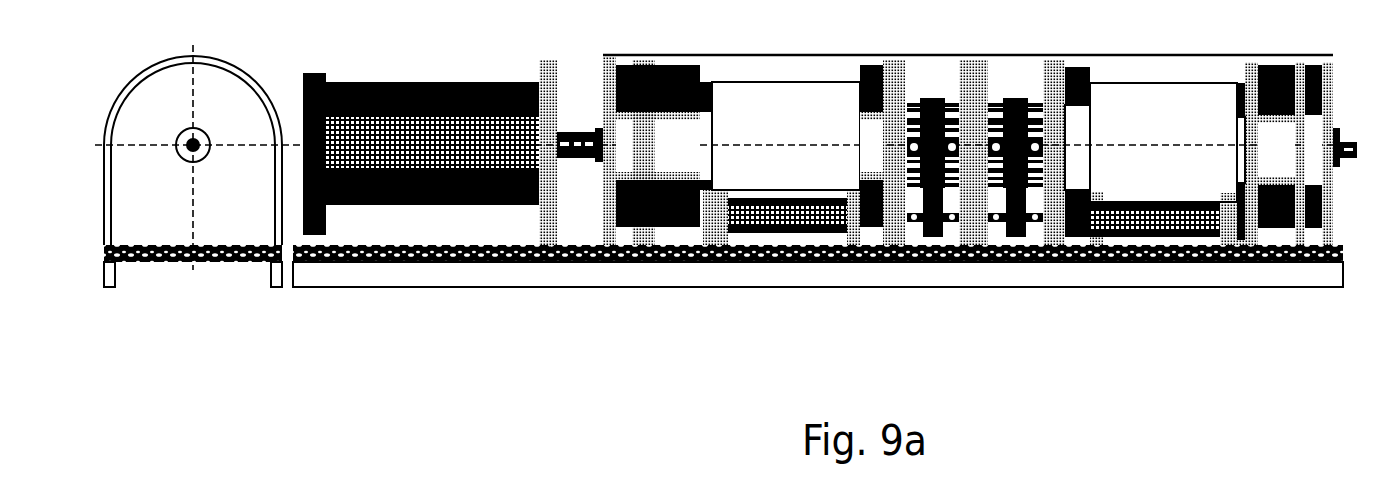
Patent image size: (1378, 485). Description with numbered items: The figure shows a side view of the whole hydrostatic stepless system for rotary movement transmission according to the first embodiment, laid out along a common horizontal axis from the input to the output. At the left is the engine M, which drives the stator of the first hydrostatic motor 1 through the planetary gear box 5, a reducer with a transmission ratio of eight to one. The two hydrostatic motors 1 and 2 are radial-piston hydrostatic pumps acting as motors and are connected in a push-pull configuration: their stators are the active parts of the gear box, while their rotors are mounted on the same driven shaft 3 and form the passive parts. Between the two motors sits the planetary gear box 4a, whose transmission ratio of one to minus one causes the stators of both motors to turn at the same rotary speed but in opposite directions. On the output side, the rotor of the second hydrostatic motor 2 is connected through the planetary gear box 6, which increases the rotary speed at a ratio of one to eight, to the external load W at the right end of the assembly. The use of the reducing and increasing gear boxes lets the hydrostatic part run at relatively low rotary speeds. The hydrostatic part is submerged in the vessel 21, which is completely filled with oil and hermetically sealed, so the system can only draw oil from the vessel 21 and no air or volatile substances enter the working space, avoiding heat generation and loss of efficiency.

The engine M is at (457, 205).
The planetary gear box 5 is at (684, 135).
The hydrostatic motor 1 is at (788, 112).
The vessel 21 is at (808, 65).
The driven shaft 3 is at (952, 167).
The planetary gear box 4a is at (985, 242).
The hydrostatic motor 2 is at (1170, 168).
The planetary gear box 6 is at (1280, 170).
The external load W is at (1348, 153).